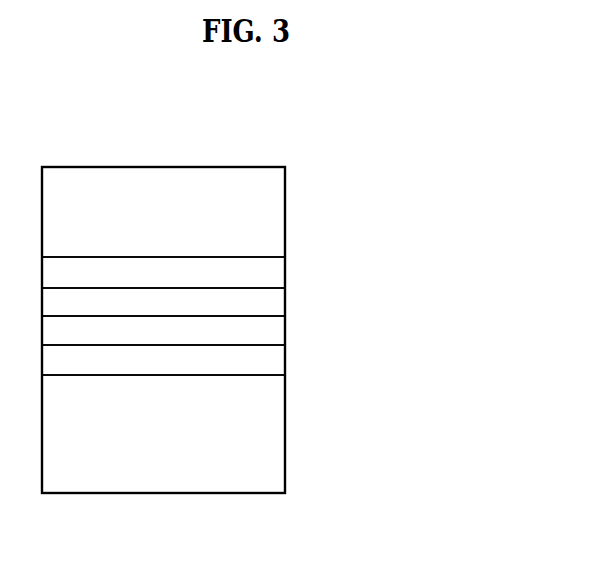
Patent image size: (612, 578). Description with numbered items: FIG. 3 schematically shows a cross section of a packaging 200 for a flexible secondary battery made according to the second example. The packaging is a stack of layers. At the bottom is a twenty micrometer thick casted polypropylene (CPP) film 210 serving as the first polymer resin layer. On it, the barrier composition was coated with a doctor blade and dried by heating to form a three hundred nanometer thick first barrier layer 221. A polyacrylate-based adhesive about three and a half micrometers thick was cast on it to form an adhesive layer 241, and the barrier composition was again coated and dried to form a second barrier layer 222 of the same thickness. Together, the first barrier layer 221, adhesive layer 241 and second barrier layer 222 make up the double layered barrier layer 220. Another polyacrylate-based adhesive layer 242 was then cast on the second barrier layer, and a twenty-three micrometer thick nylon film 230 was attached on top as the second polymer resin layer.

The packaging for a flexible secondary battery 200 is at (104, 120).
The casted polypropylene (CPP) film 210 is at (285, 443).
The double layered barrier layer 220 is at (245, 332).
The first barrier layer 221 is at (285, 358).
The second barrier layer 222 is at (285, 301).
The nylon film 230 is at (285, 213).
The adhesive layer 241 is at (285, 331).
The adhesive layer 242 is at (285, 273).